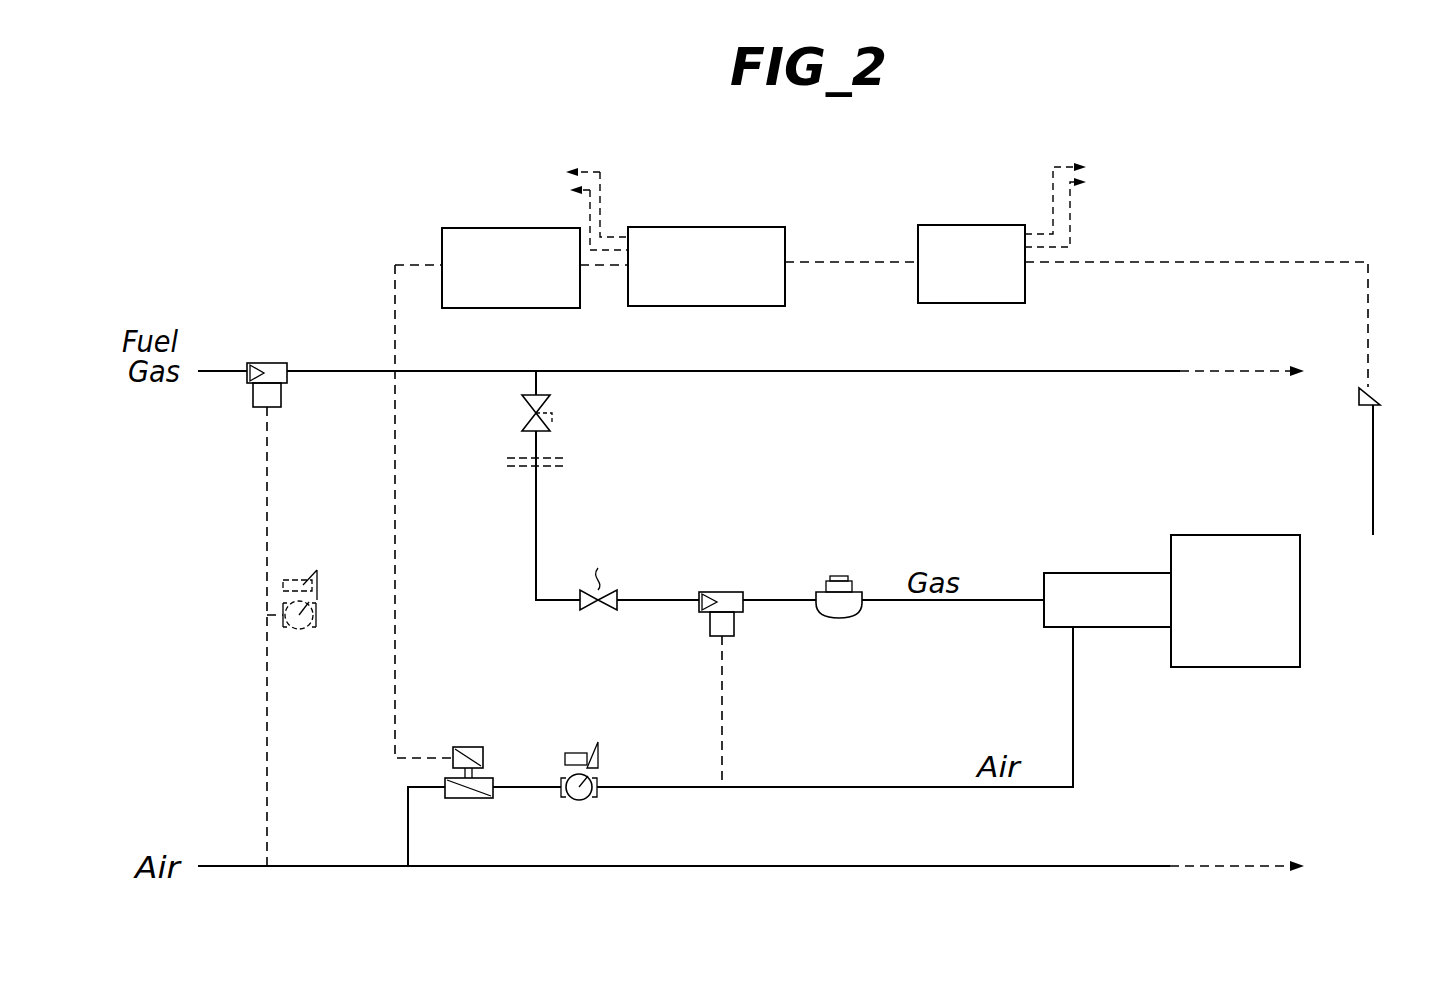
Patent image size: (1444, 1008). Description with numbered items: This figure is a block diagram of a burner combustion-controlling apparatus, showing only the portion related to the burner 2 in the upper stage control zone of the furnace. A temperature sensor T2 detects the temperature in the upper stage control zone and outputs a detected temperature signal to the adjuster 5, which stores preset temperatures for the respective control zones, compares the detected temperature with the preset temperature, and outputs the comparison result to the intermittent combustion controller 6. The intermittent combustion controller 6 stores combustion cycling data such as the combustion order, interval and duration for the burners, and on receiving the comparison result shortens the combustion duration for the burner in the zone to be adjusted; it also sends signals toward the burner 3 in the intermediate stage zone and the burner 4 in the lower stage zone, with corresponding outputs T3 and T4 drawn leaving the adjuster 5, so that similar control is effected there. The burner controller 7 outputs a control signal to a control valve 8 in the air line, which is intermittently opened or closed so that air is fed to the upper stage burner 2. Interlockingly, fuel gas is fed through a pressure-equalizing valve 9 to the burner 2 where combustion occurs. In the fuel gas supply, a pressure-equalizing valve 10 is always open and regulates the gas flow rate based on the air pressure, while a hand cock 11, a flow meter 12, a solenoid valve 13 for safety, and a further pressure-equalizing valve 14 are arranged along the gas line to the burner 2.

The burner 2 is at (1228, 550).
The burner 3 is at (956, 515).
The burner 4 is at (587, 211).
The adjuster 5 is at (972, 238).
The intermittent combustion controller 6 is at (724, 236).
The burner controller 7 is at (480, 238).
The control valve 8 is at (488, 782).
The pressure-equalizing valve 9 is at (730, 598).
The pressure-equalizing valve 10 is at (318, 587).
The hand cock 11 is at (523, 413).
The flow meter 12 is at (566, 456).
The solenoid valve 13 is at (612, 593).
The pressure-equalizing valve 14 is at (838, 576).
The temperature sensor T2 is at (1380, 398).
The temperature signal T3 is at (1072, 189).
The temperature signal T4 is at (1072, 208).